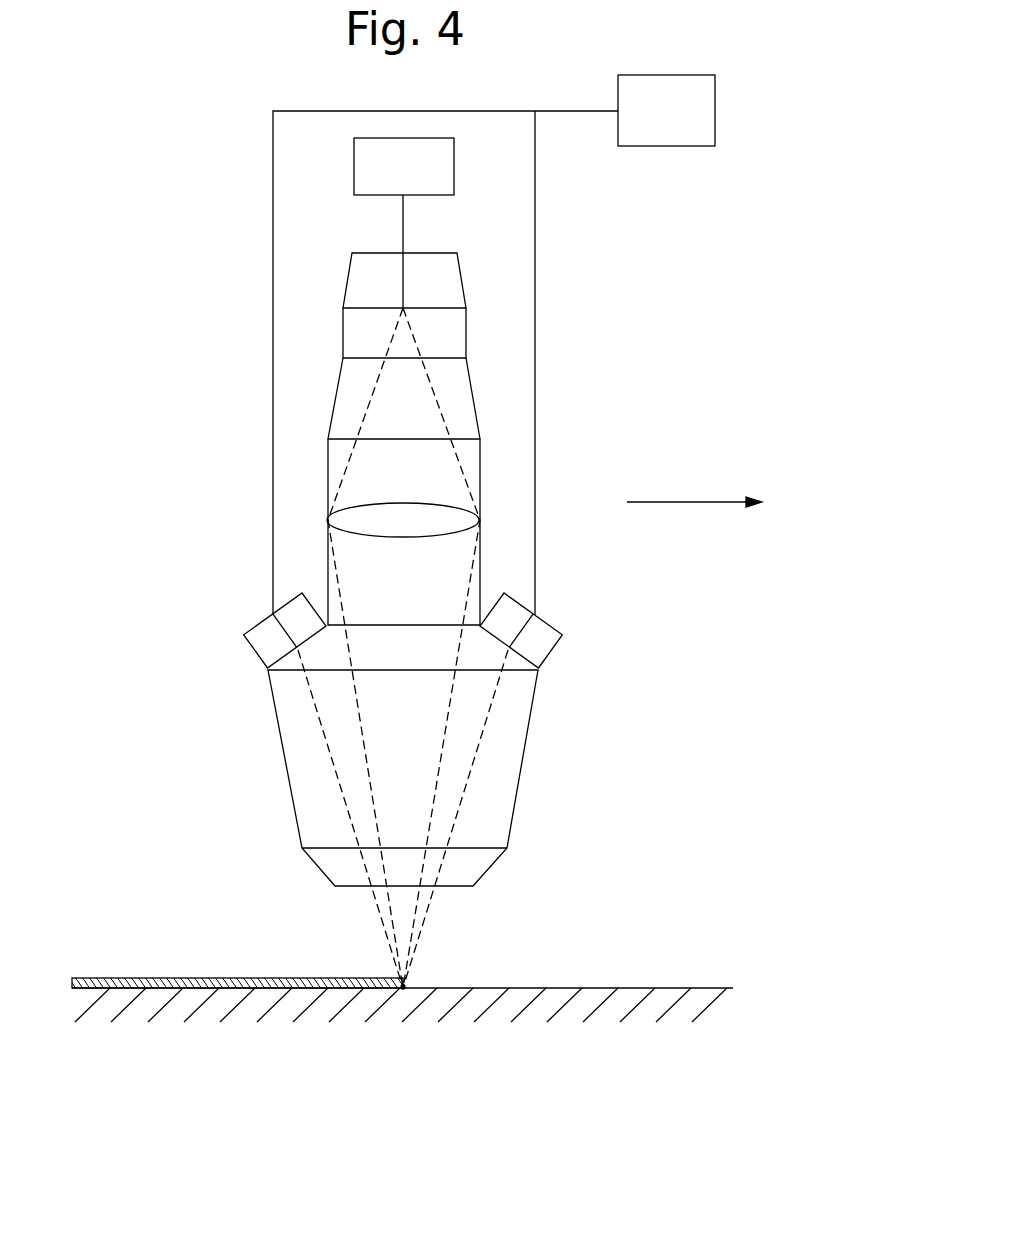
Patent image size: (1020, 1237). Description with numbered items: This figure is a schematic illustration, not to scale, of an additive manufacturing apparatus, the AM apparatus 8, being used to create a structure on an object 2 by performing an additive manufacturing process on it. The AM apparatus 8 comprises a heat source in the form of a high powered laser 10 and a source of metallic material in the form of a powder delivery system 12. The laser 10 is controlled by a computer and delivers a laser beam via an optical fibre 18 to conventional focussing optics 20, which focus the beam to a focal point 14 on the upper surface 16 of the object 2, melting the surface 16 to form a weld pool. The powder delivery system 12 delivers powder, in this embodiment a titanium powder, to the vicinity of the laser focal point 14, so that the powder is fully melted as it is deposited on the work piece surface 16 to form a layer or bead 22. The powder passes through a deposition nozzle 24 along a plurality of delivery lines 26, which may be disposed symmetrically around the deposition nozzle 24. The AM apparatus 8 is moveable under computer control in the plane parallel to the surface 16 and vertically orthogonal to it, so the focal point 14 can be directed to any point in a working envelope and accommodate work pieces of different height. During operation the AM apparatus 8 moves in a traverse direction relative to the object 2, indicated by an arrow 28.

The object 2 is at (693, 997).
The AM apparatus 8 is at (210, 242).
The high powered laser 10 is at (418, 179).
The powder delivery system 12 is at (680, 131).
The focal point 14 is at (403, 988).
The upper surface 16 is at (480, 988).
The optical fibre 18 is at (403, 220).
The focussing optics 20 is at (452, 533).
The layer or bead 22 is at (155, 977).
The deposition nozzle 24 is at (318, 863).
The delivery lines 26 is at (327, 742).
The arrow 28 is at (683, 502).